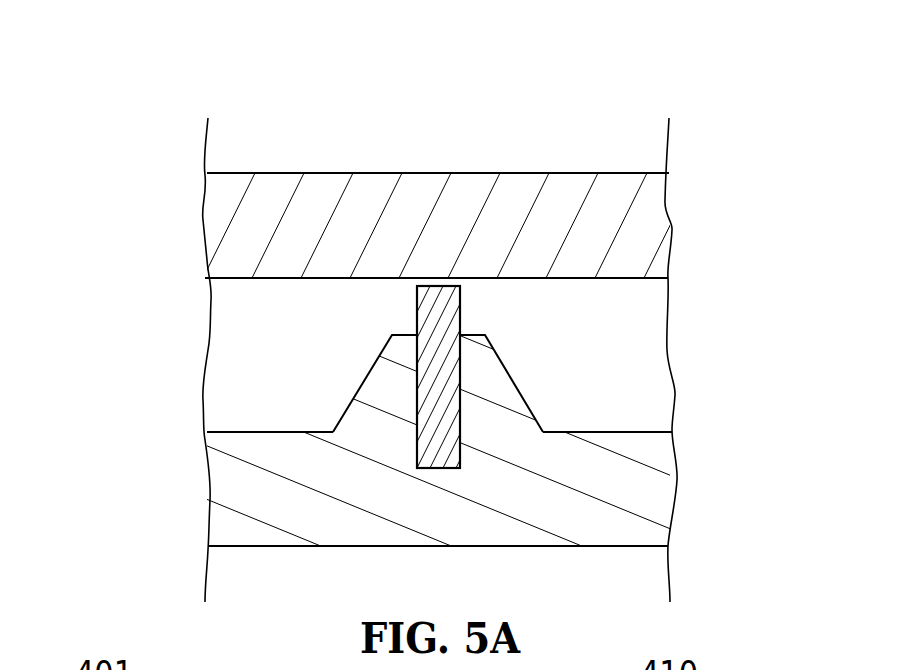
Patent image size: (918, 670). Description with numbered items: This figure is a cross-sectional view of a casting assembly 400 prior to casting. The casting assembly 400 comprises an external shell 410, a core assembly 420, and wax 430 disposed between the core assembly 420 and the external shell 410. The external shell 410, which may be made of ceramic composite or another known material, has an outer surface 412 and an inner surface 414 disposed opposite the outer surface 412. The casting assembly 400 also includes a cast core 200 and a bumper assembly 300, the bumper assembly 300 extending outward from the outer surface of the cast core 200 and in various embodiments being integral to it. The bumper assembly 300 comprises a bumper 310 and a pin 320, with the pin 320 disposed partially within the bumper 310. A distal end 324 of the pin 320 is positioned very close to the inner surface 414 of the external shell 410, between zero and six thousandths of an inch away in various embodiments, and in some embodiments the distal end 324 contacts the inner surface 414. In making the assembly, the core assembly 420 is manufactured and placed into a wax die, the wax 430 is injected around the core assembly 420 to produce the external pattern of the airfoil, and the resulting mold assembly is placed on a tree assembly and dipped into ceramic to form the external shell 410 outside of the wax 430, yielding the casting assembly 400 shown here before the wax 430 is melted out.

The casting assembly 400 is at (228, 72).
The external shell 410 is at (462, 170).
The outer surface 412 is at (327, 178).
The inner surface 414 is at (625, 278).
The wax 430 is at (605, 342).
The bumper assembly 300 is at (486, 375).
The bumper 310 is at (493, 388).
The pin 320 is at (458, 355).
The distal end 324 is at (442, 284).
The core assembly 420 is at (396, 440).
The cast core 200 is at (437, 523).